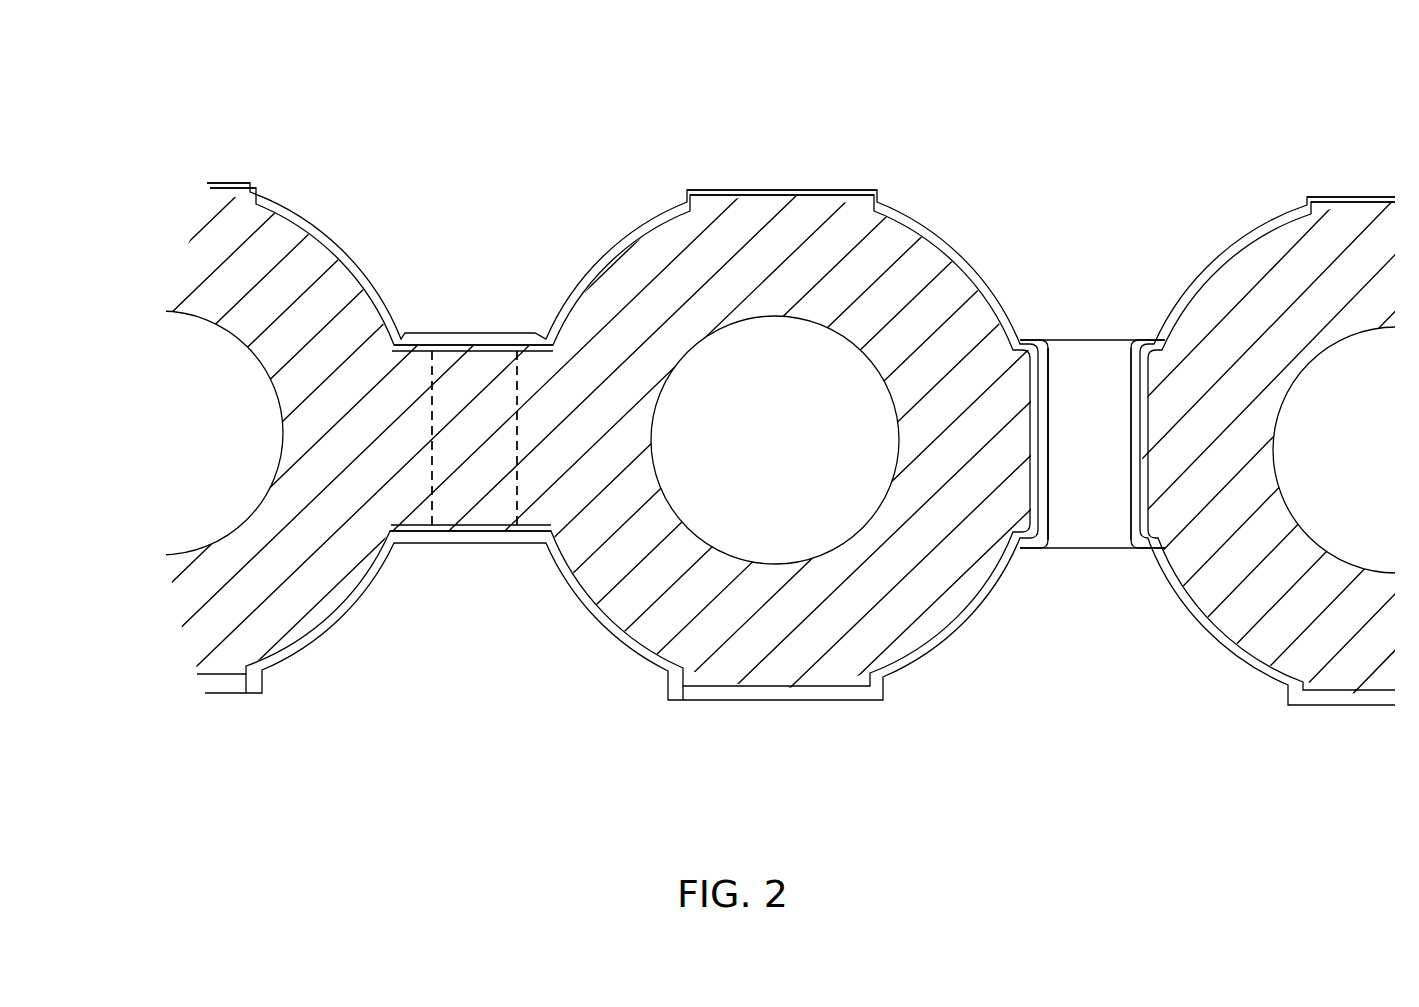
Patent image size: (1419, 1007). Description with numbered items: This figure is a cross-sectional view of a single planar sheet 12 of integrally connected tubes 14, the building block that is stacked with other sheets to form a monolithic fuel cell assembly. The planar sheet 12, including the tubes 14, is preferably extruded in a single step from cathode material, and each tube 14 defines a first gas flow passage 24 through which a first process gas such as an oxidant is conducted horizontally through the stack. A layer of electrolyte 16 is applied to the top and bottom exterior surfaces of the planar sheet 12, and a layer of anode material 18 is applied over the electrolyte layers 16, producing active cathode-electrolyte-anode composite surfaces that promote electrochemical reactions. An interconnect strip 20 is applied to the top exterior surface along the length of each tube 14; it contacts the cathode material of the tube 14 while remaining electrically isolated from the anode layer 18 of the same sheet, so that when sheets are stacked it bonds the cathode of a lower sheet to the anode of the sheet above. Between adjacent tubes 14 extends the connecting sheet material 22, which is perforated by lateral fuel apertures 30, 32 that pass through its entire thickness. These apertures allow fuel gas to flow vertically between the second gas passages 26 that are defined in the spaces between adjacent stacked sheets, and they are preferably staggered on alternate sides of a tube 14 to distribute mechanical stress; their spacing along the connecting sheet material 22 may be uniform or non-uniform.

The planar sheet 12 is at (1052, 128).
The tube 14 is at (319, 565).
The electrolyte layer 16 is at (614, 258).
The anode material layer 18 is at (325, 625).
The interconnect strip 20 is at (248, 183).
The connecting sheet material 22 is at (484, 446).
The first gas flow passage 24 is at (234, 456).
The second gas passage 26 is at (1124, 315).
The lateral fuel aperture 30 is at (1085, 395).
The lateral fuel aperture 32 is at (480, 395).